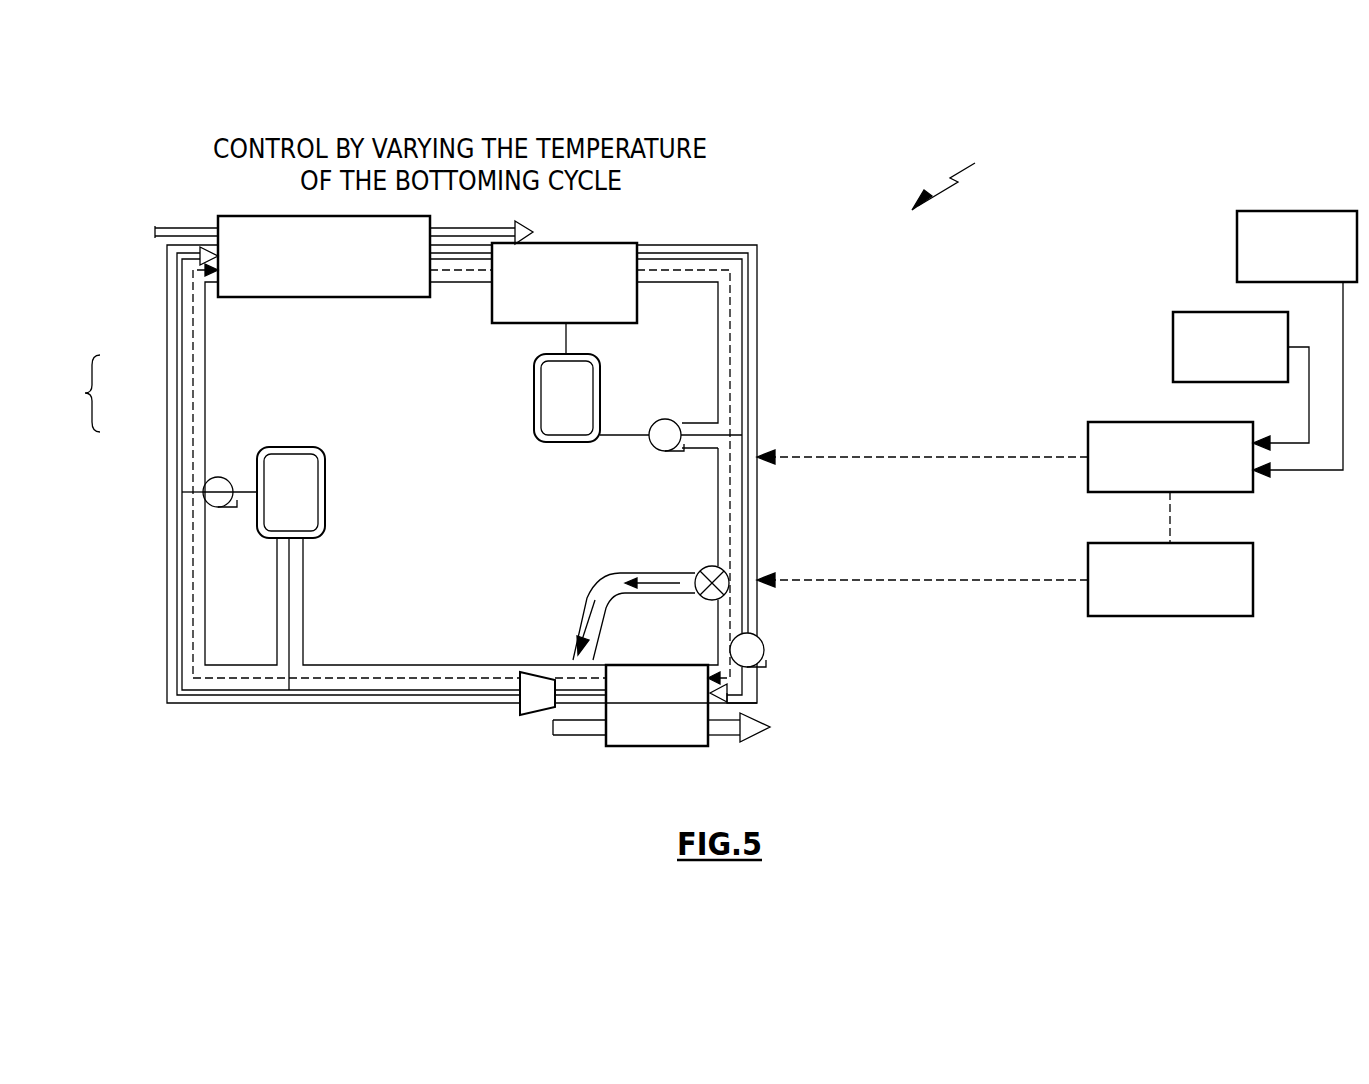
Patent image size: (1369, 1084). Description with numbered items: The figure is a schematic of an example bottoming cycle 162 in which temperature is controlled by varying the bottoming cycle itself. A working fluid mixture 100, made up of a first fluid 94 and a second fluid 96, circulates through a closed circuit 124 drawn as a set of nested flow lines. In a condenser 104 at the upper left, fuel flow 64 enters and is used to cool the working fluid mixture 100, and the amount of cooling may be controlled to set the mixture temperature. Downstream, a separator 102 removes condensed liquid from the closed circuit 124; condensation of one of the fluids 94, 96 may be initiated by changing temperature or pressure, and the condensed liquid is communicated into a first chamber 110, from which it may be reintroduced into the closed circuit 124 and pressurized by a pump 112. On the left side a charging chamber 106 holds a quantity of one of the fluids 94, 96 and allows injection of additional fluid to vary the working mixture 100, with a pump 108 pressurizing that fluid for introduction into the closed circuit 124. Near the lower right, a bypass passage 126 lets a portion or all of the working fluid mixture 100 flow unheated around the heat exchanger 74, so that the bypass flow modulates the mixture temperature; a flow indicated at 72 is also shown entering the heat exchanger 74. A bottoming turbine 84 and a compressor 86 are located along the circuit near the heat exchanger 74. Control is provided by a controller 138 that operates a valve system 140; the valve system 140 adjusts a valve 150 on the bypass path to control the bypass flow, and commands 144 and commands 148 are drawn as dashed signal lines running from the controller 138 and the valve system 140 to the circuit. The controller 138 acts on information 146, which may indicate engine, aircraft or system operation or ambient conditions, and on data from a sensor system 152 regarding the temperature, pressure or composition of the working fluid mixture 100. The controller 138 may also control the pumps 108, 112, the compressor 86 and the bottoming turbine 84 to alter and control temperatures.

The fuel flow 64 is at (185, 228).
The heat source inlet flow 72 is at (573, 738).
The heat exchanger 74 is at (695, 746).
The bottoming turbine 84 is at (535, 672).
The compressor 86 is at (764, 650).
The first fluid 94 is at (177, 388).
The second fluid 96 is at (193, 430).
The working fluid mixture 100 is at (71, 393).
The separator 102 is at (592, 243).
The condenser 104 is at (228, 216).
The charging chamber 106 is at (325, 488).
The pump 108 is at (226, 477).
The first chamber 110 is at (562, 442).
The pump 112 is at (658, 452).
The closed circuit 124 is at (757, 352).
The bypass passage 126 is at (628, 560).
The controller 138 is at (1140, 422).
The valve system 140 is at (1153, 616).
The commands 144 is at (880, 457).
The information 146 is at (1262, 211).
The commands 148 is at (880, 580).
The valve 150 is at (727, 578).
The sensor system 152 is at (1190, 312).
The bottoming cycle 162 is at (966, 177).